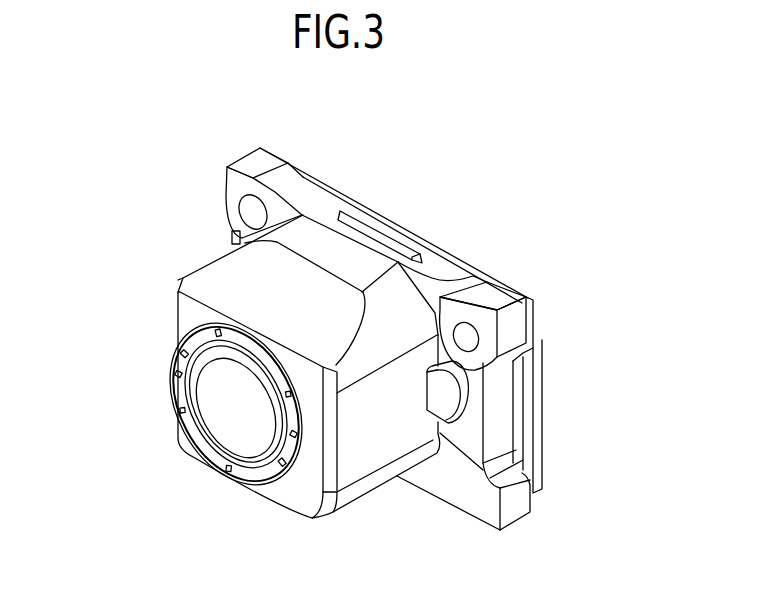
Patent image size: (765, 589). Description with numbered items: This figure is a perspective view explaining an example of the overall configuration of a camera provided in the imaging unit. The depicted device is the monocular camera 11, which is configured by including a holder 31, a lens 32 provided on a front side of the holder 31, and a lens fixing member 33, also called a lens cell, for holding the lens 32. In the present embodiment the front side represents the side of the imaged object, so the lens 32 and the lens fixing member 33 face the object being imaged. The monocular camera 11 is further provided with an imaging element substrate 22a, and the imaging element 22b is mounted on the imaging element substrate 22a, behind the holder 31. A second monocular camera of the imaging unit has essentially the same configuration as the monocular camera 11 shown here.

The monocular camera 11 is at (95, 148).
The imaging element substrate 22a is at (542, 340).
The imaging element 22b is at (383, 238).
The holder 31 is at (226, 272).
The lens 32 is at (241, 430).
The lens fixing member 33 is at (206, 319).